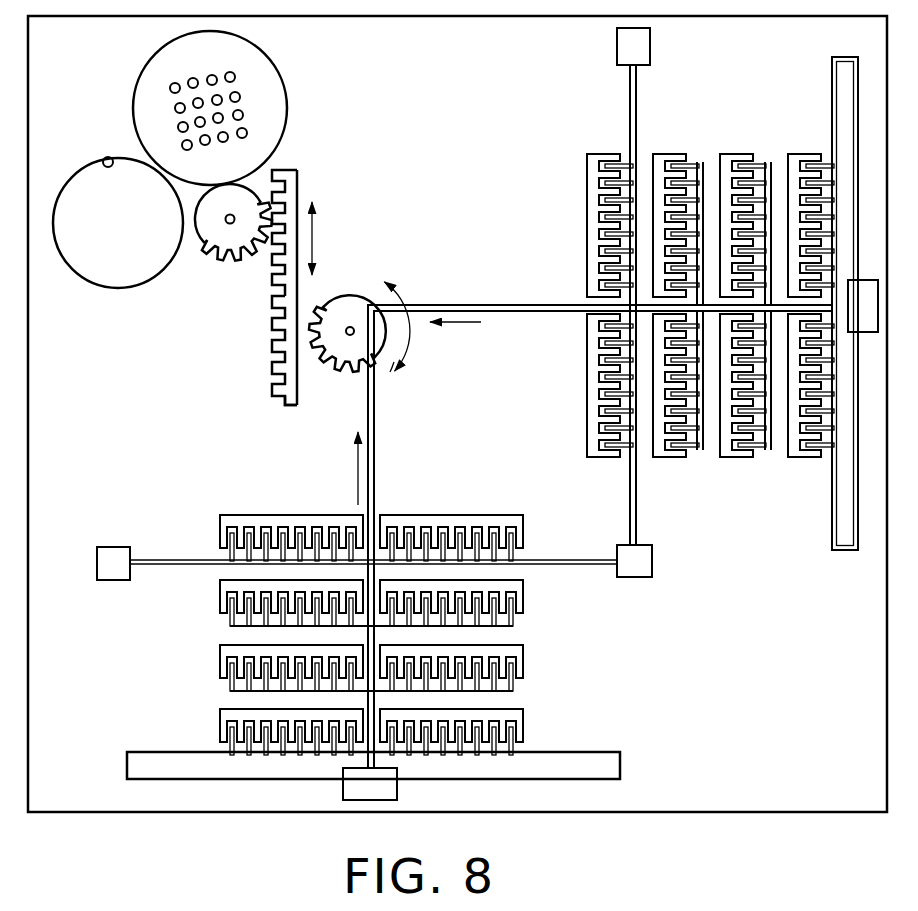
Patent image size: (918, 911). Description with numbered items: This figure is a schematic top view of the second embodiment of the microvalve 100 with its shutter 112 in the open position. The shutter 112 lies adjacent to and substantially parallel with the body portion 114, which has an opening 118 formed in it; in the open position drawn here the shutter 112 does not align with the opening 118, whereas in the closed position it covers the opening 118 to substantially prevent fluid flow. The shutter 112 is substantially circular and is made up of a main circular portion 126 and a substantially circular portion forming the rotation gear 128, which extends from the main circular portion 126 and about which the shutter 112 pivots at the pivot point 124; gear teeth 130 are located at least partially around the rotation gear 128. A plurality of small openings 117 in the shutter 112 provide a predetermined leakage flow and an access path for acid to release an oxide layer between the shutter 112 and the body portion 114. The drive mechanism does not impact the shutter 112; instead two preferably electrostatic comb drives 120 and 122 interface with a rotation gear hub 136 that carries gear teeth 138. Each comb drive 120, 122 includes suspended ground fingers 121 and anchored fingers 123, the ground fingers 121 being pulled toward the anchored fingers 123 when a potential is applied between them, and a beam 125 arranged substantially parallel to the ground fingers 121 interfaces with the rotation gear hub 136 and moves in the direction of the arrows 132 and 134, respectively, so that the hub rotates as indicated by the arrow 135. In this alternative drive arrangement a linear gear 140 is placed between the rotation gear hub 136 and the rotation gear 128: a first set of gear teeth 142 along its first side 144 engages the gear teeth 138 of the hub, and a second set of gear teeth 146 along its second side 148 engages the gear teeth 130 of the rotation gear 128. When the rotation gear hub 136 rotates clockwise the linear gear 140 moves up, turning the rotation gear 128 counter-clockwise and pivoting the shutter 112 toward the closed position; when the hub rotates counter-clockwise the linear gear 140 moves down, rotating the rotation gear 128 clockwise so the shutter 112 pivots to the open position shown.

The microvalve 100 is at (478, 62).
The shutter 112 is at (224, 108).
The body portion 114 is at (92, 491).
The small openings 117 is at (176, 82).
The opening 118 is at (100, 158).
The comb drive 120 is at (351, 644).
The suspended ground fingers 121 is at (526, 560).
The comb drive 122 is at (706, 120).
The anchored fingers 123 is at (524, 516).
The pivot point 124 is at (231, 210).
The beam 125 is at (484, 306).
The main circular portion 126 is at (137, 102).
The rotation gear 128 is at (197, 234).
The gear teeth 130 is at (229, 265).
The arrow 132 is at (352, 478).
The arrow 134 is at (481, 322).
The arrow 135 is at (411, 338).
The rotation gear hub 136 is at (349, 294).
The gear teeth 138 is at (317, 298).
The linear gear 140 is at (262, 294).
The first set of gear teeth 142 is at (303, 409).
The first side 144 is at (297, 182).
The second set of gear teeth 146 is at (284, 171).
The second side 148 is at (290, 377).